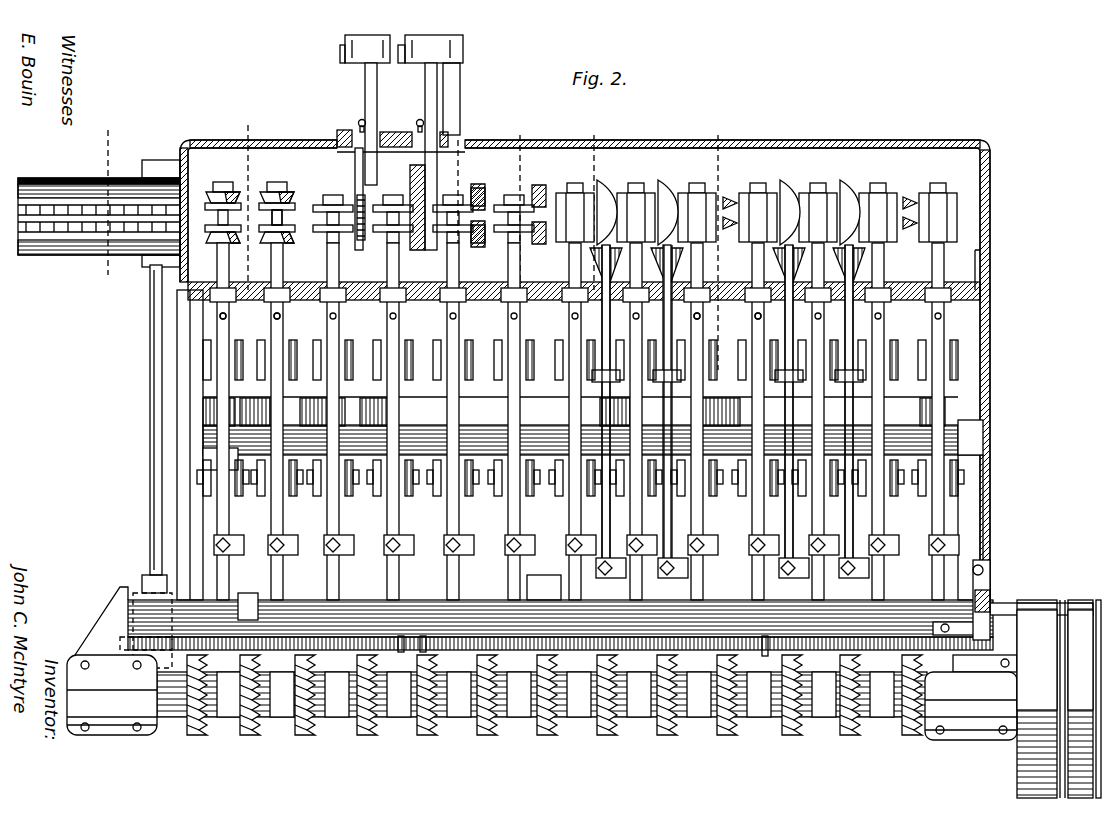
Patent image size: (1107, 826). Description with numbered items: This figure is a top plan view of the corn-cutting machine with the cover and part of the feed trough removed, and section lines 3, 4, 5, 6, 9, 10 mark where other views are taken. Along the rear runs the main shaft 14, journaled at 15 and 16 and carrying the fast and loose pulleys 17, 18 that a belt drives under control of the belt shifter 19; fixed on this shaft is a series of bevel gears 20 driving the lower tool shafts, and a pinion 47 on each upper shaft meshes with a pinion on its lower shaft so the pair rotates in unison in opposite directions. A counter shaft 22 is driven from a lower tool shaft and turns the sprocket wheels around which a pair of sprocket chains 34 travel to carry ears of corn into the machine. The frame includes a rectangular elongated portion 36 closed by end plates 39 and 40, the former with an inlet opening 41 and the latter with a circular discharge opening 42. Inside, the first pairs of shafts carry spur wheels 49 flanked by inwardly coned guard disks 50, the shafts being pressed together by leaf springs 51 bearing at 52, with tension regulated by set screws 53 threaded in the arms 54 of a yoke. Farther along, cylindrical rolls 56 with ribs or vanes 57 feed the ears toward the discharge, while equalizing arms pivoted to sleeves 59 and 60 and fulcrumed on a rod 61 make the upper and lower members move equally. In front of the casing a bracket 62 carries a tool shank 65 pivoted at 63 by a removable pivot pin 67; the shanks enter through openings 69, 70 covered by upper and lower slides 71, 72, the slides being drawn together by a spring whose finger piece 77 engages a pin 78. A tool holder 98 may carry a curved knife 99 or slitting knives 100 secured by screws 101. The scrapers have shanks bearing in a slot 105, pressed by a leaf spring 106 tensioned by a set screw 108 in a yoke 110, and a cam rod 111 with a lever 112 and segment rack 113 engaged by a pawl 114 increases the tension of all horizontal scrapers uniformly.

The section line 3 is at (117, 129).
The section line 4 is at (236, 116).
The section line 5 is at (506, 127).
The section line 6 is at (472, 142).
The section line 9 is at (602, 131).
The section line 10 is at (726, 132).
The main shaft 14 is at (162, 718).
The journal 15 is at (112, 695).
The journal 16 is at (971, 706).
The fast pulley 17 is at (1080, 699).
The loose pulley 18 is at (1037, 699).
The belt shifter 19 is at (350, 600).
The bevel gear 20 is at (250, 735).
The counter shaft 22 is at (150, 415).
The sprocket chain 34 is at (70, 252).
The rectangular elongated portion 36 is at (820, 140).
The end plate 39 is at (184, 150).
The end plate 40 is at (990, 170).
The inlet opening 41 is at (178, 265).
The discharge opening 42 is at (980, 226).
The pinion 47 is at (422, 636).
The spur wheel 49 is at (270, 230).
The inwardly coned guard disk 50 is at (215, 190).
The leaf spring 51 is at (216, 356).
The spring bearing point 52 is at (273, 316).
The set screw 53 is at (236, 548).
The yoke arm 54 is at (330, 556).
The cylindrical roll 56 is at (690, 193).
The rib or vane 57 is at (858, 215).
The sleeve 59 is at (380, 497).
The sleeve 60 is at (414, 363).
The rod 61 is at (250, 455).
The bracket 62 is at (460, 72).
The pivot point 63 is at (375, 40).
The tool shank 65 is at (377, 90).
The pivot pin 67 is at (342, 45).
The opening 69 is at (356, 152).
The opening 70 is at (437, 160).
The upper slide 71 is at (405, 150).
The lower slide 72 is at (337, 133).
The finger piece 77 is at (358, 122).
The pin 78 is at (362, 120).
The tool holder 98 is at (340, 225).
The curved knife 99 is at (548, 190).
The slitting knife 100 is at (367, 205).
The screw 101 is at (488, 192).
The slot 105 is at (858, 396).
The leaf spring 106 is at (602, 406).
The set screw 108 is at (698, 545).
The yoke 110 is at (548, 566).
The cam rod 111 is at (690, 572).
The lever 112 is at (985, 560).
The segment rack 113 is at (984, 568).
The pawl 114 is at (990, 592).